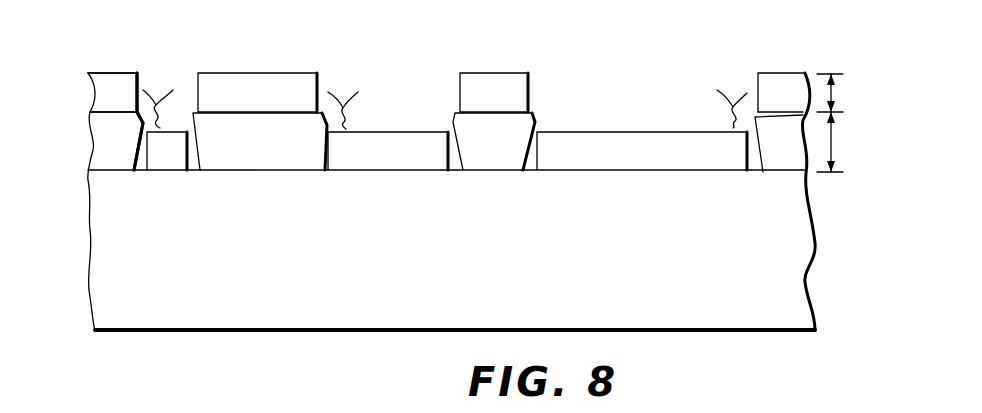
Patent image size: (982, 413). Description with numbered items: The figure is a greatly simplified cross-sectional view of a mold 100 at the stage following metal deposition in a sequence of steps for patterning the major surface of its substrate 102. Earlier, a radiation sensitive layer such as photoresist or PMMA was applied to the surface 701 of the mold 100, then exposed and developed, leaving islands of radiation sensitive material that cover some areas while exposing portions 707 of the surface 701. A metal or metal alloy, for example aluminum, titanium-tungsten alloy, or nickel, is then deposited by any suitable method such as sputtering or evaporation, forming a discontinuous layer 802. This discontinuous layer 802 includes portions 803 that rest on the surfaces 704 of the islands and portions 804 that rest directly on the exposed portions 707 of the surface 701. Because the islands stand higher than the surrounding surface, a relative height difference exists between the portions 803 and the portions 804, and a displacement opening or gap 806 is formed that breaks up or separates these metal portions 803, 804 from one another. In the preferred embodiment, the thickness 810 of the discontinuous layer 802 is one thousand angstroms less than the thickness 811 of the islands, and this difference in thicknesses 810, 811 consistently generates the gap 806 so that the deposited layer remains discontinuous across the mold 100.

The mold 100 is at (738, 359).
The substrate 102 is at (805, 282).
The surface 701 is at (777, 173).
The surfaces 704 is at (100, 115).
The portions 707 is at (170, 173).
The discontinuous layer 802 is at (78, 78).
The portions 803 is at (92, 95).
The portions 804 is at (387, 130).
The gap 806 is at (445, 95).
The thickness 810 is at (855, 68).
The thickness 811 is at (835, 145).